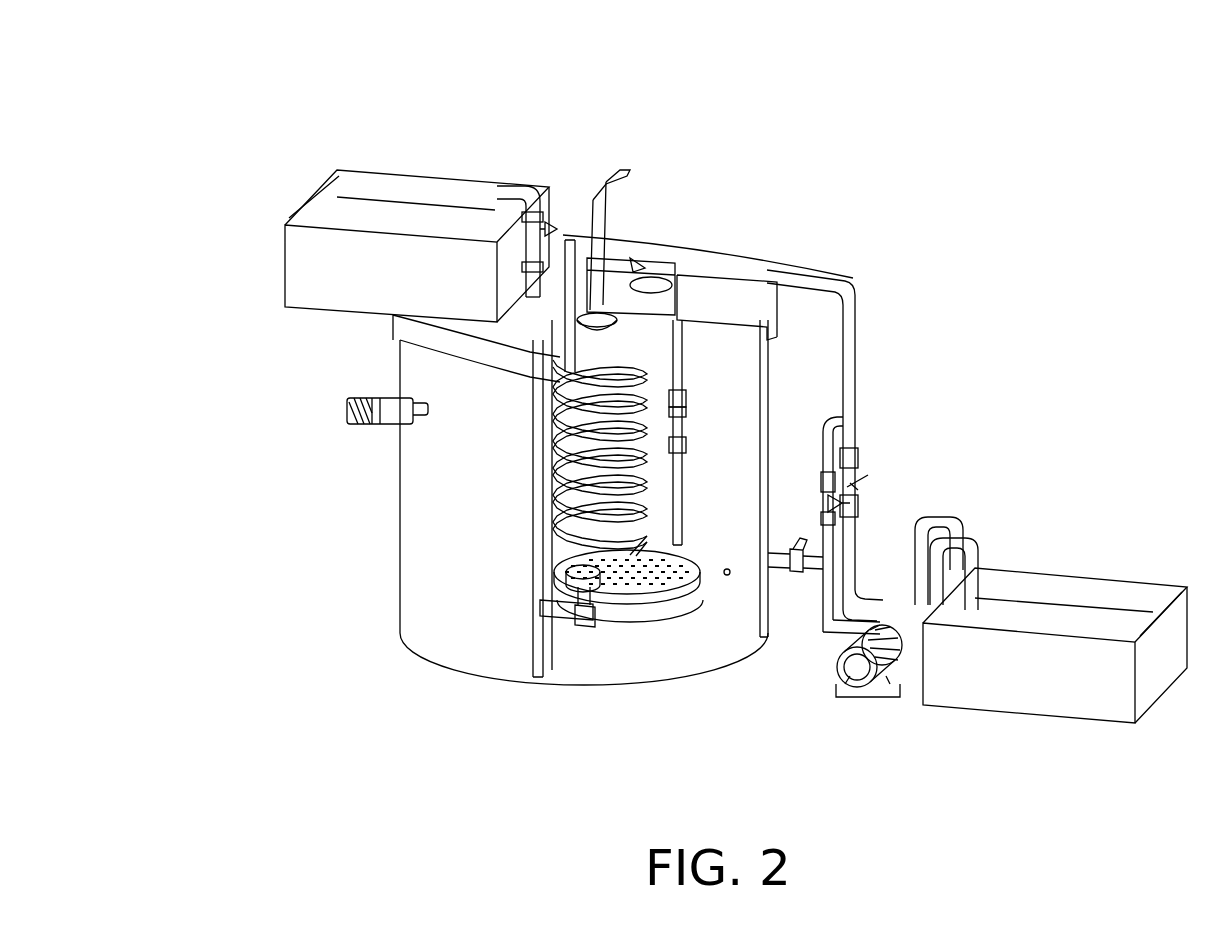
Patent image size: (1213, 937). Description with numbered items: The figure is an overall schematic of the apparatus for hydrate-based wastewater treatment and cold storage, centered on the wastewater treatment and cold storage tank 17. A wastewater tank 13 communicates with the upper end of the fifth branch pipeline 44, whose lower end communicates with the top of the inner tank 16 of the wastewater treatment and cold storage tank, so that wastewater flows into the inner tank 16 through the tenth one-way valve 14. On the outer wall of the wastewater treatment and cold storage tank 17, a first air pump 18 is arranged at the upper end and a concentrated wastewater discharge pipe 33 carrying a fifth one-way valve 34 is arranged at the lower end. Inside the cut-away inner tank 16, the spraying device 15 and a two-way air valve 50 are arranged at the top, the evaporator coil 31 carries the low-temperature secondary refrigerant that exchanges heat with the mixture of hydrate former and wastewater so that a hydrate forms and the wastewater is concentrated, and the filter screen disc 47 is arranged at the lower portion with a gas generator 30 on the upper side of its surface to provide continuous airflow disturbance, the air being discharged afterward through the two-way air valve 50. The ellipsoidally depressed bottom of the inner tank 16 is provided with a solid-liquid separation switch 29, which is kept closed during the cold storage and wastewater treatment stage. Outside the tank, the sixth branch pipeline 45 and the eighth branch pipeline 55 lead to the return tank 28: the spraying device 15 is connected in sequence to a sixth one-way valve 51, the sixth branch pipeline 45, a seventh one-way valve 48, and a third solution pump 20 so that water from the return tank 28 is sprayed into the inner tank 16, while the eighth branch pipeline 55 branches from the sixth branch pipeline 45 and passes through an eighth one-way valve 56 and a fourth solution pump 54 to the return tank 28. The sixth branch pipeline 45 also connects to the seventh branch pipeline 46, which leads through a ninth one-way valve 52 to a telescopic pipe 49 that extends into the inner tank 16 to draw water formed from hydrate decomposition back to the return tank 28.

The wastewater tank 13 is at (367, 282).
The tenth one-way valve 14 is at (546, 228).
The spraying device 15 is at (600, 282).
The inner tank 16 is at (674, 585).
The wastewater treatment and cold storage tank 17 is at (477, 438).
The first air pump 18 is at (347, 418).
The third solution pump 20 is at (912, 605).
The return tank 28 is at (981, 677).
The solid-liquid separation switch 29 is at (585, 625).
The gas generator 30 is at (553, 610).
The evaporator coil 31 is at (556, 468).
The concentrated wastewater discharge pipe 33 is at (728, 575).
The fifth one-way valve 34 is at (800, 557).
The fifth branch pipeline 44 is at (516, 197).
The sixth branch pipeline 45 is at (732, 277).
The seventh branch pipeline 46 is at (678, 330).
The filter screen disc 47 is at (657, 578).
The seventh one-way valve 48 is at (858, 478).
The telescopic pipe 49 is at (683, 473).
The two-way air valve 50 is at (653, 282).
The sixth one-way valve 51 is at (637, 265).
The ninth one-way valve 52 is at (688, 418).
The fourth solution pump 54 is at (856, 682).
The eighth branch pipeline 55 is at (831, 595).
The eighth one-way valve 56 is at (845, 482).